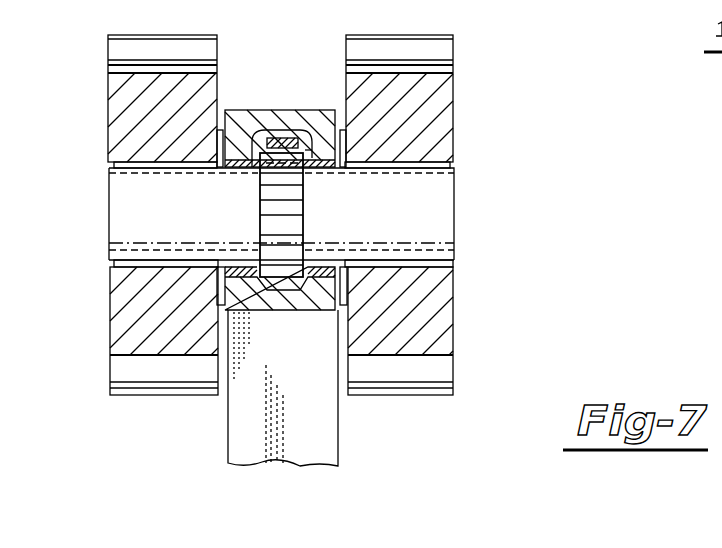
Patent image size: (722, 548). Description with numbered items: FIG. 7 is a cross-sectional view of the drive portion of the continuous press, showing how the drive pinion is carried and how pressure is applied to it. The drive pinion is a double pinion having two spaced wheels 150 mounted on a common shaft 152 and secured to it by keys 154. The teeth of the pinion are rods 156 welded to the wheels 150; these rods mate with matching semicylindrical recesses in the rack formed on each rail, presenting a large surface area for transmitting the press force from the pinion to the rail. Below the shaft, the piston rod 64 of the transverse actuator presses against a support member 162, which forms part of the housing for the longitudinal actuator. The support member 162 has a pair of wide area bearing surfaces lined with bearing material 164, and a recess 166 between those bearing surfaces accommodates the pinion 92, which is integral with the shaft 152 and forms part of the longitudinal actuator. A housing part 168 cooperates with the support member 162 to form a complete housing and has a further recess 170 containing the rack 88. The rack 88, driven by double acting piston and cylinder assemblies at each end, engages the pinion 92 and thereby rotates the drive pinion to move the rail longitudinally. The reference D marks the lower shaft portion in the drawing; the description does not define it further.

The wheels 150 is at (108, 105).
The common shaft 152 is at (448, 205).
The keys 154 is at (455, 166).
The rods 156 is at (445, 57).
The support member 162 is at (325, 298).
The bearing material 164 is at (322, 169).
The recess 166 is at (271, 288).
The housing part 168 is at (239, 110).
The further recess 170 is at (308, 150).
The rack 88 is at (264, 130).
The pinion 92 is at (293, 223).
The piston rod 64 is at (236, 410).
The drive shaft direction D is at (325, 412).